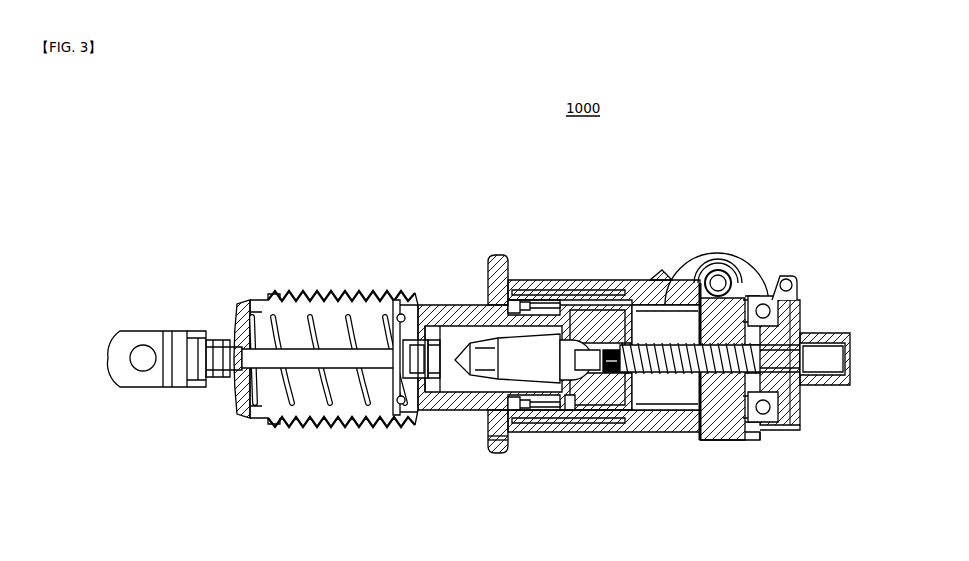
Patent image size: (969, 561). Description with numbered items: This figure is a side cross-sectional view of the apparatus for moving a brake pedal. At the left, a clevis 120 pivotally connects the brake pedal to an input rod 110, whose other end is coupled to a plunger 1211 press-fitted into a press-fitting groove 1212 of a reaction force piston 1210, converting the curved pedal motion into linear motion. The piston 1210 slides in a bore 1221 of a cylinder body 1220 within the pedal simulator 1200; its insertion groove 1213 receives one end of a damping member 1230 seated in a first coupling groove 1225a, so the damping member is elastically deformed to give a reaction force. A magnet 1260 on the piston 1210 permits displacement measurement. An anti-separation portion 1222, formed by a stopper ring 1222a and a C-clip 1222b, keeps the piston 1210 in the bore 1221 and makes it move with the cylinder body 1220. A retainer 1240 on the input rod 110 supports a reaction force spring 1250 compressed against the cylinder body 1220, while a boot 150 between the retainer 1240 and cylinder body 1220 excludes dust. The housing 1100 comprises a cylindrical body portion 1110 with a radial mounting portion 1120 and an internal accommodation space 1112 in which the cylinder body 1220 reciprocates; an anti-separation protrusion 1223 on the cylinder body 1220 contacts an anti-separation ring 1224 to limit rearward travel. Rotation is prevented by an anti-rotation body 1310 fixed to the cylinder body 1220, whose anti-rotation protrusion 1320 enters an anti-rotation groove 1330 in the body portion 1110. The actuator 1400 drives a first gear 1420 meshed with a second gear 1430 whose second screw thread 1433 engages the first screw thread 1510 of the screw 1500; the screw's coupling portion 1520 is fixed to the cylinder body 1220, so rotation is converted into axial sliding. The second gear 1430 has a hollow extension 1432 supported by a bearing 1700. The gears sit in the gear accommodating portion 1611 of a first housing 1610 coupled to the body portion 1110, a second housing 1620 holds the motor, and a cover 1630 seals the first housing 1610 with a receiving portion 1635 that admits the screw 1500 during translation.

The clevis 120 is at (141, 332).
The retainer 1240 is at (237, 396).
The reaction force spring 1250 is at (293, 300).
The input rod 110 is at (322, 358).
The boot 150 is at (300, 432).
The pedal simulator 1200 is at (398, 441).
The reaction force piston 1210 is at (454, 345).
The plunger 1211 is at (422, 342).
The press-fitting groove 1212 is at (405, 432).
The insertion groove 1213 is at (452, 412).
The cylinder body 1220 is at (586, 322).
The bore 1221 is at (462, 400).
The anti-separation portion 1222 is at (385, 203).
The stopper ring 1222a is at (392, 300).
The C-clip 1222b is at (345, 296).
The anti-separation protrusion 1223 is at (521, 453).
The anti-separation ring 1224 is at (492, 455).
The first coupling groove 1225a is at (572, 413).
The damping member 1230 is at (554, 354).
The magnet 1260 is at (500, 318).
The housing 1100 is at (545, 184).
The body portion 1110 is at (522, 280).
The mounting portion 1120 is at (500, 258).
The accommodation space 1112 is at (650, 276).
The anti-rotation body 1310 is at (545, 433).
The anti-rotation protrusion 1320 is at (568, 420).
The anti-rotation groove 1330 is at (668, 322).
The actuator 1400 is at (708, 258).
The first gear 1420 is at (720, 256).
The second gear 1430 is at (718, 441).
The extension 1432 is at (758, 442).
The second screw thread 1433 is at (726, 432).
The screw 1500 is at (643, 388).
The first screw thread 1510 is at (670, 386).
The coupling portion 1520 is at (612, 378).
The first housing 1610 is at (778, 427).
The gear accommodating portion 1611 is at (802, 425).
The second housing 1620 is at (748, 252).
The cover 1630 is at (828, 386).
The receiving portion 1635 is at (836, 355).
The bearing 1700 is at (783, 274).